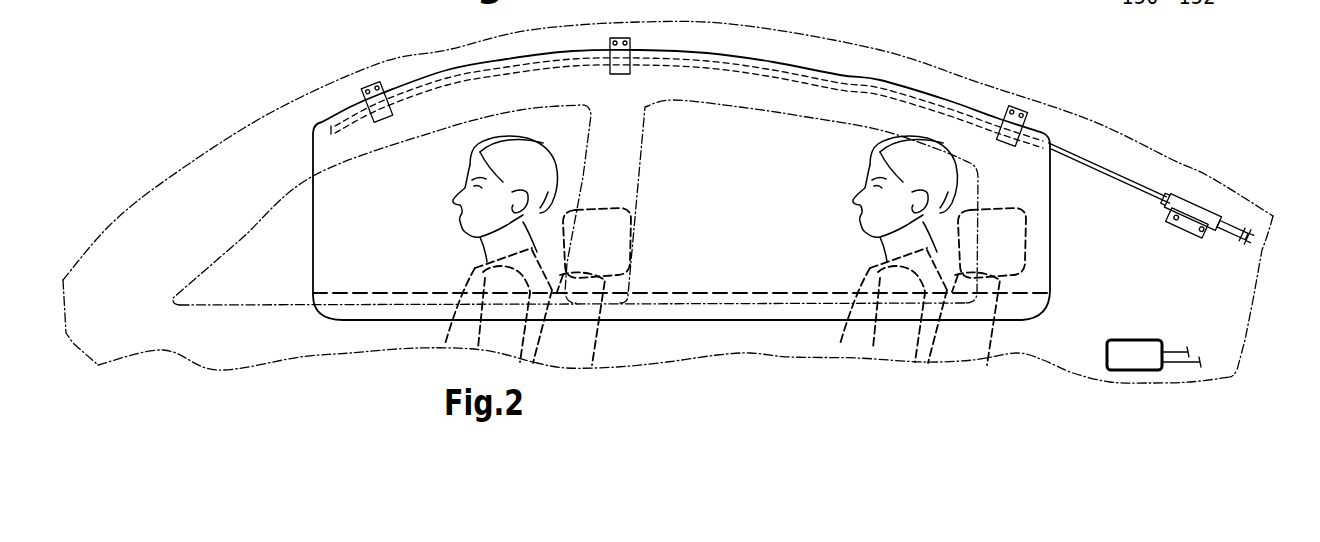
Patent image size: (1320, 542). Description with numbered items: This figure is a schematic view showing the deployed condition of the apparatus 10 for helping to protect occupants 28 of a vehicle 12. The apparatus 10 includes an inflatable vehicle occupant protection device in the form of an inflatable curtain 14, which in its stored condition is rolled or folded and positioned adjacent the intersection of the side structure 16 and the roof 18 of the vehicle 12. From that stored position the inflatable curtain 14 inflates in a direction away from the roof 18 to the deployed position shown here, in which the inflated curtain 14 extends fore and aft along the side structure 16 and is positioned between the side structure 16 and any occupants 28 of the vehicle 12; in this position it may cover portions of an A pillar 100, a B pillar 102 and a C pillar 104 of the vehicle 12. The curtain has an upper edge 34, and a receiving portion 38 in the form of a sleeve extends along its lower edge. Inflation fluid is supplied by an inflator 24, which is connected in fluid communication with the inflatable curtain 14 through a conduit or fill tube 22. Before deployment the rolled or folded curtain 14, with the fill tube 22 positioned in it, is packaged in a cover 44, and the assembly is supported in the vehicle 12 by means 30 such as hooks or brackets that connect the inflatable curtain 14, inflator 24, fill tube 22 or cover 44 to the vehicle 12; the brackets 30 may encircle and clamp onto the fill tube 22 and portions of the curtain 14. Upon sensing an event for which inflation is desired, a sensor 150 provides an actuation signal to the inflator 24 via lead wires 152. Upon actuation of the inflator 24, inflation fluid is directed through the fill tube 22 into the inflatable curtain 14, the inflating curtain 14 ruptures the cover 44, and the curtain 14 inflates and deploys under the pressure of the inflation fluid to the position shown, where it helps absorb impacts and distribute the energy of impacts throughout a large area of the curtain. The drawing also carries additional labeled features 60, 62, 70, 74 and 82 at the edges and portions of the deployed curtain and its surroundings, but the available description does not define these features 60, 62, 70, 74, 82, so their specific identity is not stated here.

The apparatus 10 is at (373, 43).
The vehicle 12 is at (270, 113).
The inflatable curtain 14 is at (682, 272).
The side structure 16 is at (659, 338).
The roof 18 is at (762, 30).
The fill tube 22 is at (1133, 178).
The inflator 24 is at (1205, 208).
The occupants 28 is at (447, 212).
The brackets 30 is at (370, 85).
The upper edge 34 is at (880, 80).
The receiving portion 38 is at (745, 313).
The cover 44 is at (503, 98).
The A-pillar 60 is at (245, 208).
The front edge of cushion 62 is at (325, 231).
The lower edge of cushion 70 is at (313, 258).
The rear edge of cushion 74 is at (1053, 201).
The rear cushion portion 82 is at (1040, 238).
The A pillar 100 is at (173, 208).
The B pillar 102 is at (622, 178).
The C pillar 104 is at (1228, 305).
The sensor 150 is at (1133, 360).
The lead wires 152 is at (1252, 238).